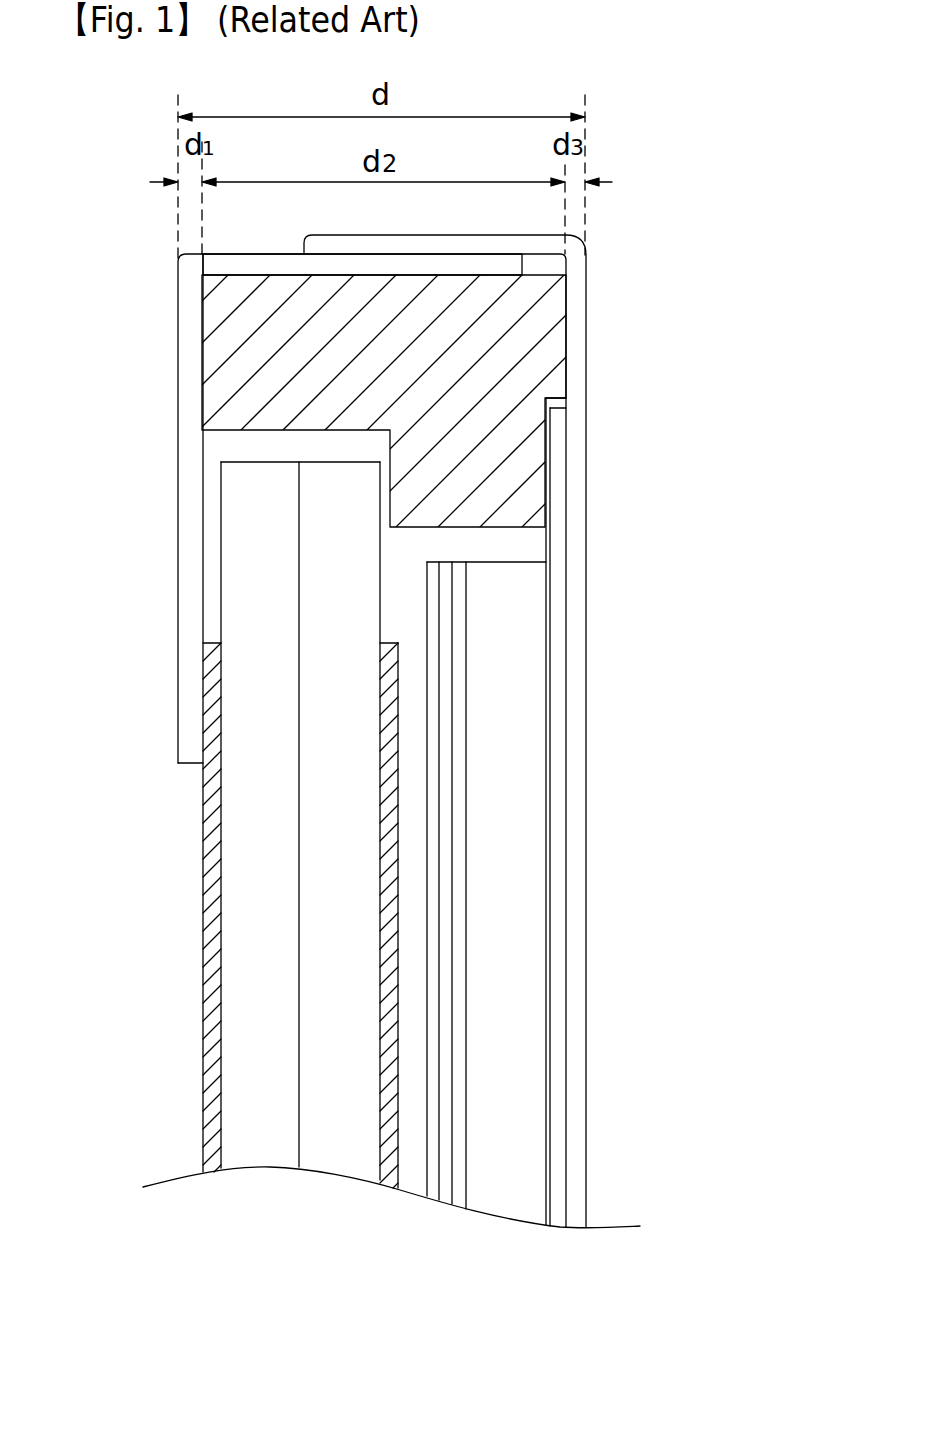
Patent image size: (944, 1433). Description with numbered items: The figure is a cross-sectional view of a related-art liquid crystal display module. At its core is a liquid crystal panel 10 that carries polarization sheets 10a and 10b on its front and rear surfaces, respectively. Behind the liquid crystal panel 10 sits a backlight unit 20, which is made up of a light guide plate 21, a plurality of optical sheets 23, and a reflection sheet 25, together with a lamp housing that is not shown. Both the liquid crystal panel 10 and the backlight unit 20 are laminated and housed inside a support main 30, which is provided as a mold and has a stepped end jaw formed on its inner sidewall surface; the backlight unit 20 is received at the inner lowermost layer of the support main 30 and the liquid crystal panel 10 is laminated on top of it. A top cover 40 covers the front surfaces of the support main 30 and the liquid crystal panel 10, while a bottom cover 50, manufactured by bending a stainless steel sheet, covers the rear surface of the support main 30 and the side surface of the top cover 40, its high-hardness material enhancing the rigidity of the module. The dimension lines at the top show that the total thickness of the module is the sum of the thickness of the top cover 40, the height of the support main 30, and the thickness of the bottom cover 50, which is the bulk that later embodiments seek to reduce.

The liquid crystal panel 10 is at (378, 1195).
The polarization sheet 10a is at (217, 885).
The polarization sheet 10b is at (397, 1020).
The backlight unit 20 is at (517, 883).
The light guide plate 21 is at (523, 1210).
The optical sheets 23 is at (453, 1198).
The reflection sheet 25 is at (578, 855).
The support main 30 is at (220, 338).
The top cover 40 is at (193, 418).
The bottom cover 50 is at (587, 318).